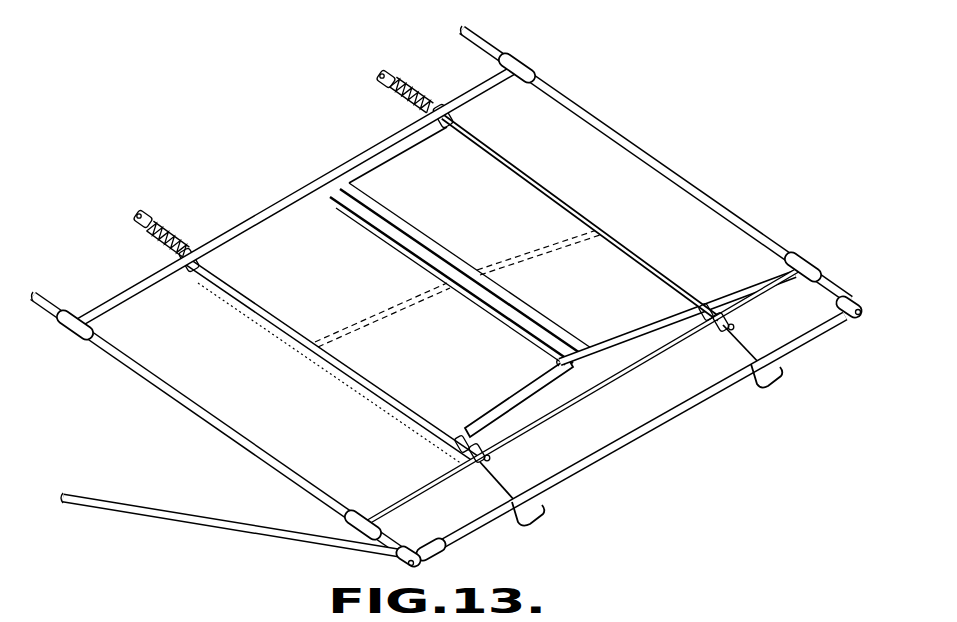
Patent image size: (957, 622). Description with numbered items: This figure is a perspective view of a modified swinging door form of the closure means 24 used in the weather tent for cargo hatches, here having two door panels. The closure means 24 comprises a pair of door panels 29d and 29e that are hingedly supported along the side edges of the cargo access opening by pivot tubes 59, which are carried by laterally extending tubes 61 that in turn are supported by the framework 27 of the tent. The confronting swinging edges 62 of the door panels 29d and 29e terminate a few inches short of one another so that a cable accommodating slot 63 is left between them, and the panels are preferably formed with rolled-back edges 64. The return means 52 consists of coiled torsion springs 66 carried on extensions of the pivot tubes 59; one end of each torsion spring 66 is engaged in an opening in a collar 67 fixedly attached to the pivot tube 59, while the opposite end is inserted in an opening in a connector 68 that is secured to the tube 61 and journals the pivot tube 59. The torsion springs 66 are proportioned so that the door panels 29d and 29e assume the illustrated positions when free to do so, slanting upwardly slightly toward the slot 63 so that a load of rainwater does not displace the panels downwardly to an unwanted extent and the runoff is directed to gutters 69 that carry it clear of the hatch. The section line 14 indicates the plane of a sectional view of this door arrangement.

The section line 14 is at (763, 172).
The closure means 24 is at (267, 166).
The framework 27 is at (766, 221).
The door panel 29d is at (351, 306).
The door panel 29e is at (541, 242).
The return means 52 is at (406, 57).
The pivot tube 59 is at (735, 326).
The laterally extending tube 61 is at (264, 213).
The swinging edge 62 is at (387, 221).
The cable accommodating slot 63 is at (428, 258).
The rolled-back edge 64 is at (627, 331).
The coiled torsion spring 66 is at (181, 232).
The collar 67 is at (139, 236).
The connector 68 is at (177, 260).
The gutter 69 is at (781, 372).